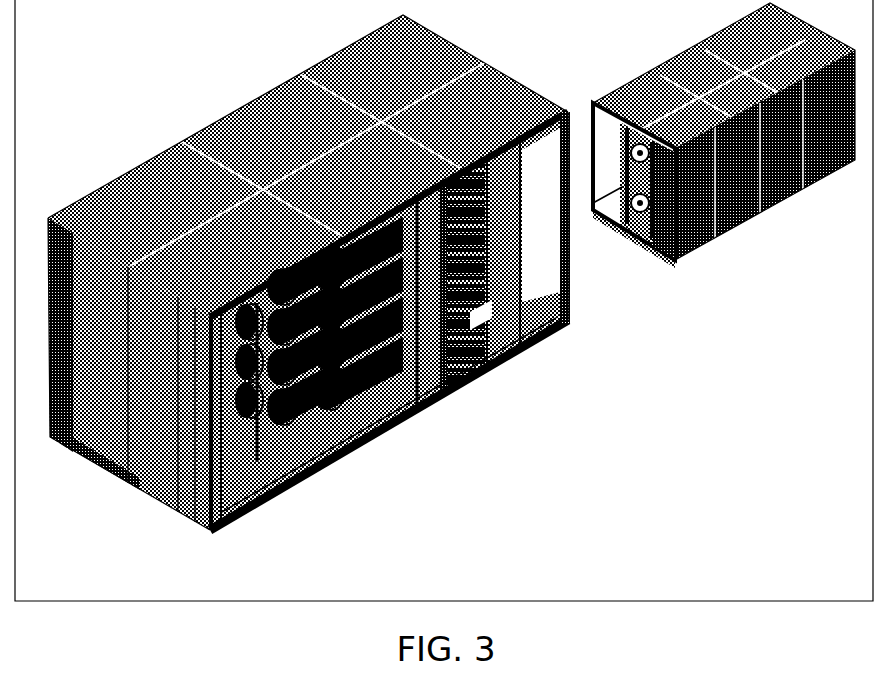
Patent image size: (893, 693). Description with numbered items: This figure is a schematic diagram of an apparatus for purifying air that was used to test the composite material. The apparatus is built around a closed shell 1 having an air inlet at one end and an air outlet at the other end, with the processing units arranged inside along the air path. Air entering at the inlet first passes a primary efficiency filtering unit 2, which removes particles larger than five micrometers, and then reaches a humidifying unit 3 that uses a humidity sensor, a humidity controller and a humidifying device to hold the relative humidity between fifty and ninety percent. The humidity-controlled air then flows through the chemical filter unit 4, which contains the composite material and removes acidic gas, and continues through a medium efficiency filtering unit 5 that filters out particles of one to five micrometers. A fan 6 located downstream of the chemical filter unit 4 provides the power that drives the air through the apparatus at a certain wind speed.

The closed shell 1 is at (148, 182).
The primary efficiency filtering unit 2 is at (158, 428).
The humidifying unit 3 is at (290, 483).
The chemical filter unit 4 is at (392, 425).
The medium efficiency filtering unit 5 is at (470, 382).
The fan 6 is at (522, 302).